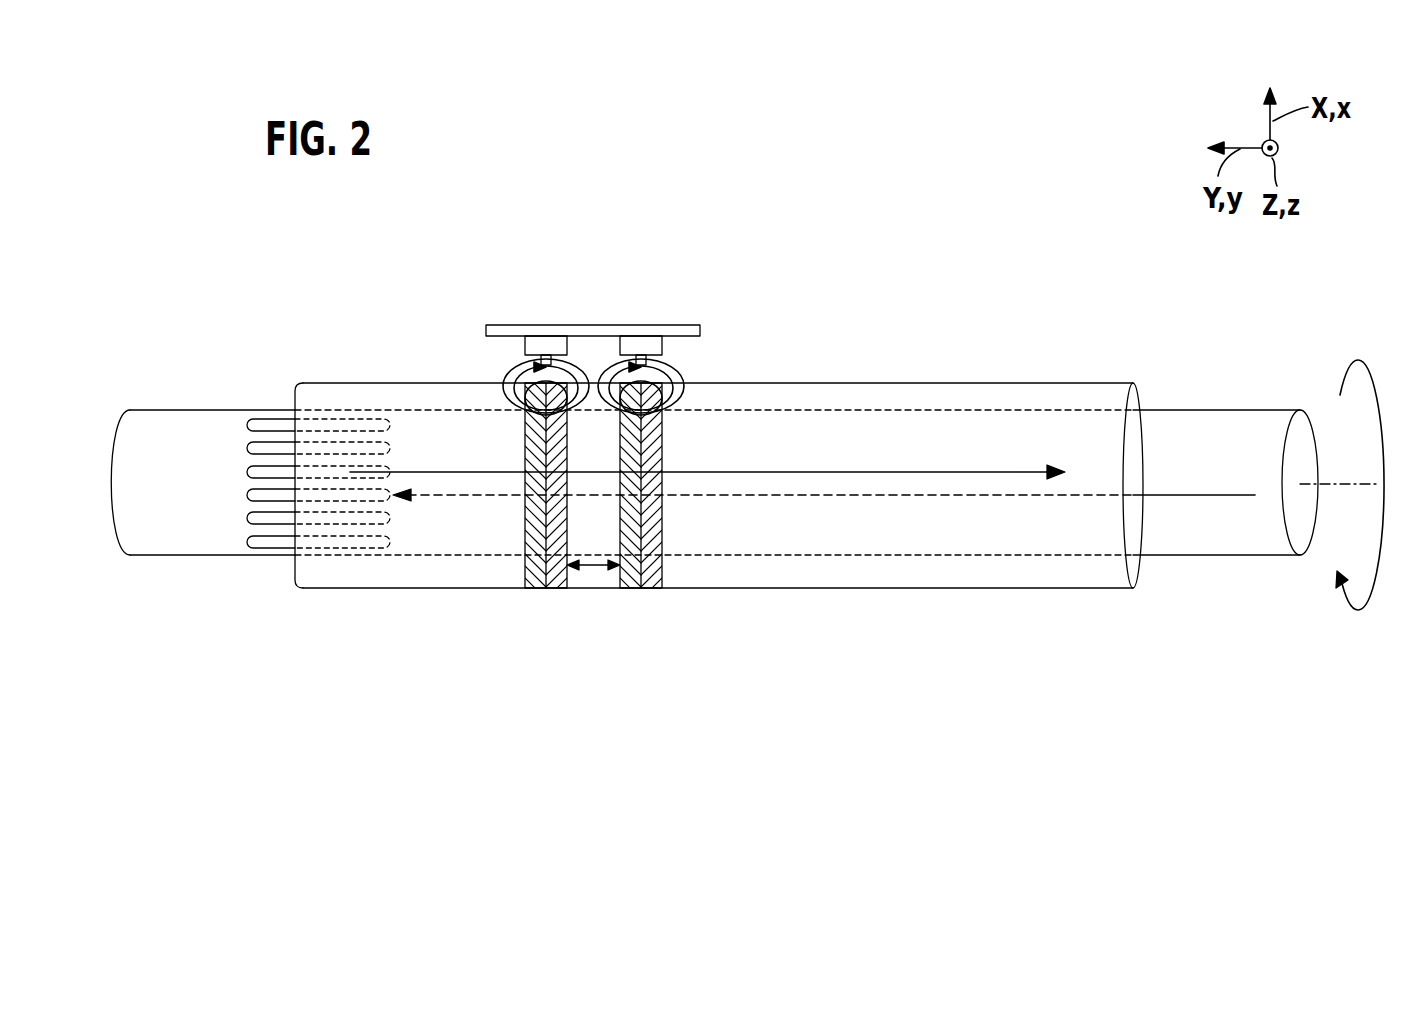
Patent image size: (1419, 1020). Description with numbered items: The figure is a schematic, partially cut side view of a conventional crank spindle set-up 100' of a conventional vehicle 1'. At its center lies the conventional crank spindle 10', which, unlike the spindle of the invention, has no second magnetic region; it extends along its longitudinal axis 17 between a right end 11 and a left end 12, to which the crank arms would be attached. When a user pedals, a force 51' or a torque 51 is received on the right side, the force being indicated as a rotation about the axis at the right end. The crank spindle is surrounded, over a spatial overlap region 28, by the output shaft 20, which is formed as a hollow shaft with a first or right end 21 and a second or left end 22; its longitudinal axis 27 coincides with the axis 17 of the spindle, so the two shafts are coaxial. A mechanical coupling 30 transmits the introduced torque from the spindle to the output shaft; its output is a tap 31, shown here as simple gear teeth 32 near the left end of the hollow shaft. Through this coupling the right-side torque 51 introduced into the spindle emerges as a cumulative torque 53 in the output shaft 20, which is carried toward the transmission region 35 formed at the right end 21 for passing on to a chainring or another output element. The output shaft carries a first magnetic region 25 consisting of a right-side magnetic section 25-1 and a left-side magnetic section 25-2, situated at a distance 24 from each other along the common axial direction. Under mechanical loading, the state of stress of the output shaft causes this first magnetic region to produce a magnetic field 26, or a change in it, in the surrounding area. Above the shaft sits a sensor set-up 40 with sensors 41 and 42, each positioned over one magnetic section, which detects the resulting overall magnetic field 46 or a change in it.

The conventional vehicle 1' is at (1000, 244).
The conventional crank spindle set-up 100' is at (1000, 244).
The conventional crank spindle 10' is at (714, 440).
The left end of crank spindle 12 is at (131, 412).
The right end of crank spindle 11 is at (1281, 416).
The mechanical coupling 30 is at (318, 437).
The tap 31 is at (318, 437).
The gear teeth 32 is at (264, 417).
The output shaft 20 is at (719, 528).
The second or left end of output shaft 22 is at (306, 595).
The first or right end of output shaft 21 is at (1133, 595).
The transmission region 35 is at (1135, 373).
The torque 53 is at (915, 467).
The right-side torque 51 is at (824, 458).
The right-side force 51' is at (1360, 438).
The longitudinal axis of crank spindle 17 is at (1340, 446).
The longitudinal axis of output shaft 27 is at (1346, 482).
The sensor set-up 40 is at (636, 306).
The sensor 41 is at (641, 314).
The sensor 42 is at (545, 343).
The magnetic field 26 is at (591, 373).
The overall magnetic field 46 is at (512, 373).
The first magnetic region 25 is at (593, 548).
The first or right-side magnetic section 25-1 is at (662, 596).
The second or left-side magnetic section 25-2 is at (567, 596).
The distance 24 is at (593, 568).
The spatial overlap region 28 is at (298, 594).